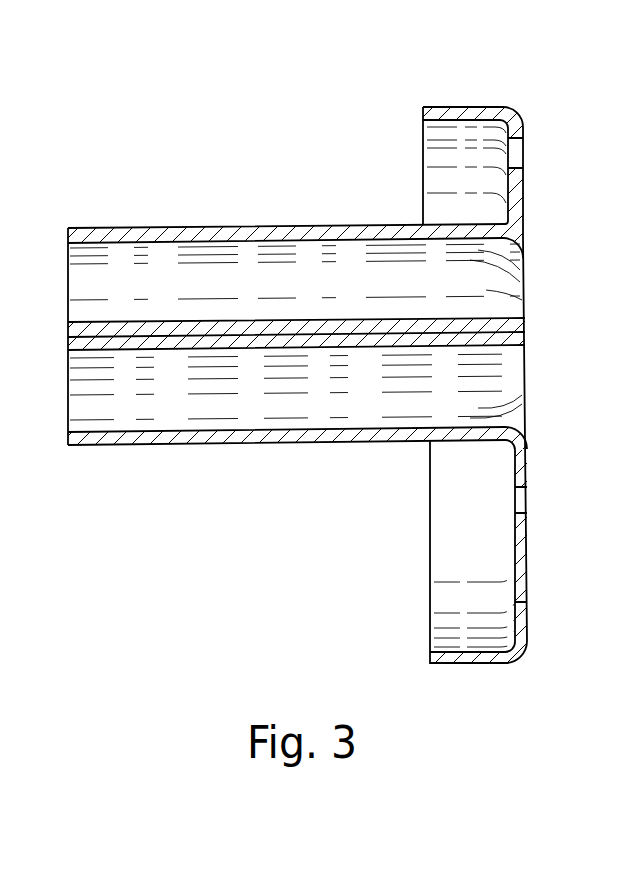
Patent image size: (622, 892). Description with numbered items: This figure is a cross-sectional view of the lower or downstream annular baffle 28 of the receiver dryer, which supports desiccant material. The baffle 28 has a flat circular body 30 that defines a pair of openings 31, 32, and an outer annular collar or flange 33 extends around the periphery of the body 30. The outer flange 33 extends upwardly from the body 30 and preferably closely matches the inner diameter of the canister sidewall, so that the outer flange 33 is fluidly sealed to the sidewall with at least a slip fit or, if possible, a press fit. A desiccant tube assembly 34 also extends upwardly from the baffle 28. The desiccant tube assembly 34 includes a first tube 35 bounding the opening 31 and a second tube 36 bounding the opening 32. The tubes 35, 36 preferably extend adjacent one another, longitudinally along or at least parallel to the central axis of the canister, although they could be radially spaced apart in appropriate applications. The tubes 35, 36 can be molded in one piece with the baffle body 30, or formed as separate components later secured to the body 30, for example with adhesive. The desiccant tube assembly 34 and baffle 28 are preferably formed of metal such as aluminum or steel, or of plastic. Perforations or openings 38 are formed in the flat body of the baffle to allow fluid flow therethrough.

The lower annular baffle 28 is at (424, 178).
The flat circular body 30 is at (524, 567).
The opening 31 is at (498, 395).
The opening 32 is at (493, 290).
The outer annular collar or flange 33 is at (467, 107).
The desiccant tube assembly 34 is at (283, 441).
The first tube 35 is at (165, 444).
The second tube 36 is at (215, 228).
The perforations or openings 38 is at (518, 155).